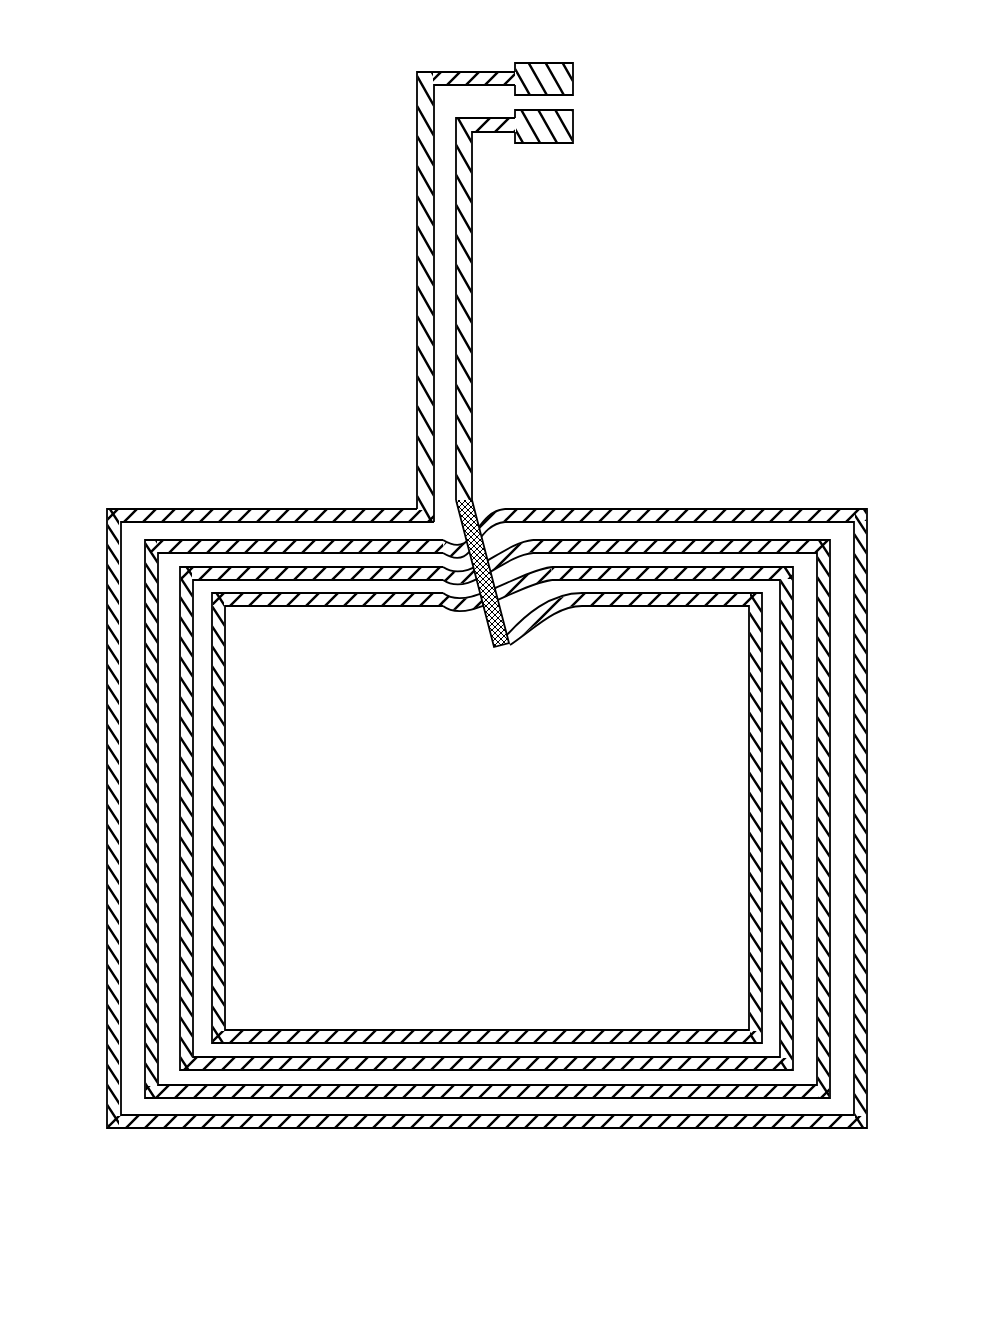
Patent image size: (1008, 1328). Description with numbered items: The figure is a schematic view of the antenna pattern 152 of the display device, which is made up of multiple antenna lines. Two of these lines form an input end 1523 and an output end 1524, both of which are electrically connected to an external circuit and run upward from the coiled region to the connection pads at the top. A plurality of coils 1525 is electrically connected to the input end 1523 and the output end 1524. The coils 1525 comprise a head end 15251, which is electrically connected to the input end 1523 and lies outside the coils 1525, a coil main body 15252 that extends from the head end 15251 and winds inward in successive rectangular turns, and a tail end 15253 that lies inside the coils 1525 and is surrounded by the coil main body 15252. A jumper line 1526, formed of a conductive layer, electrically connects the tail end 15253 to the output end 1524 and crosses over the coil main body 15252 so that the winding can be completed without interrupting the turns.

The antenna pattern 152 is at (226, 121).
The input end 1523 is at (427, 212).
The output end 1524 is at (463, 278).
The coils 1525 is at (308, 442).
The head end 15251 is at (201, 547).
The coil main body 15252 is at (507, 650).
The tail end 15253 is at (418, 507).
The jumper line 1526 is at (474, 515).